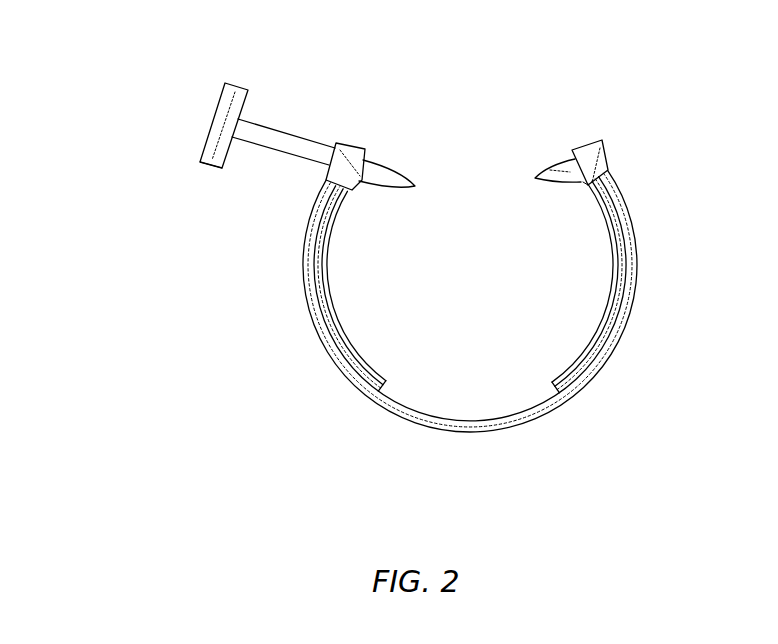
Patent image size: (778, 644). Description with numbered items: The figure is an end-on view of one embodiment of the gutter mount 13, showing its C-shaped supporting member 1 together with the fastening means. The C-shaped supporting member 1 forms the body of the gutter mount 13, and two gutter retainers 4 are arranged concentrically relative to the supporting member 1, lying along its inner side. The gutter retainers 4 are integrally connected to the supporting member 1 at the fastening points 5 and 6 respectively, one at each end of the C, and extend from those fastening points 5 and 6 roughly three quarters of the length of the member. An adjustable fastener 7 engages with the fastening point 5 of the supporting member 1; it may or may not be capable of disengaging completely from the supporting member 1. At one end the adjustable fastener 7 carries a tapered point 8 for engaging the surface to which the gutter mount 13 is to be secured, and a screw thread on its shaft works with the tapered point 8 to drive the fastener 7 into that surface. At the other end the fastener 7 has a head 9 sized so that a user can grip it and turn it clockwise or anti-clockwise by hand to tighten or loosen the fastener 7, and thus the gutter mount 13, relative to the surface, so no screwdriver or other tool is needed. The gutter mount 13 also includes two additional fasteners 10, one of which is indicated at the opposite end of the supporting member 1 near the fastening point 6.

The C-shaped supporting member 1 is at (303, 286).
The gutter retainers 4 is at (355, 353).
The fastening point 5 is at (341, 148).
The fastening point 6 is at (598, 143).
The adjustable fastener 7 is at (376, 134).
The tapered point 8 is at (397, 187).
The head 9 is at (222, 100).
The additional fasteners 10 is at (572, 190).
The gutter mount 13 is at (127, 138).